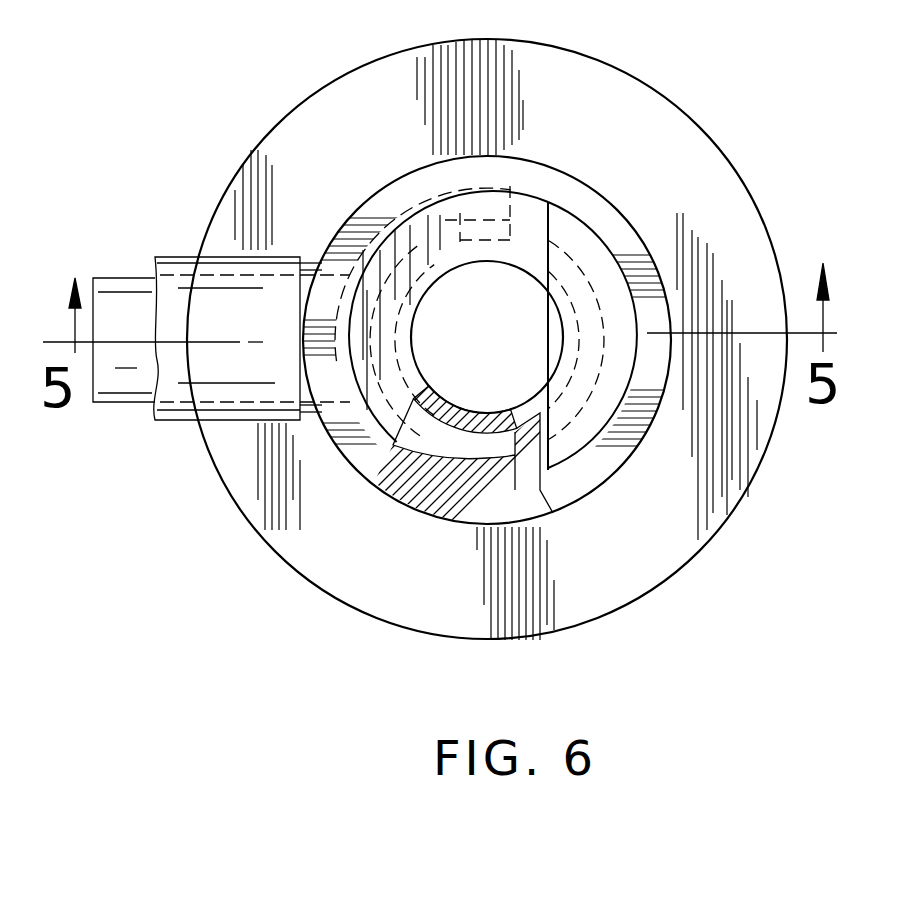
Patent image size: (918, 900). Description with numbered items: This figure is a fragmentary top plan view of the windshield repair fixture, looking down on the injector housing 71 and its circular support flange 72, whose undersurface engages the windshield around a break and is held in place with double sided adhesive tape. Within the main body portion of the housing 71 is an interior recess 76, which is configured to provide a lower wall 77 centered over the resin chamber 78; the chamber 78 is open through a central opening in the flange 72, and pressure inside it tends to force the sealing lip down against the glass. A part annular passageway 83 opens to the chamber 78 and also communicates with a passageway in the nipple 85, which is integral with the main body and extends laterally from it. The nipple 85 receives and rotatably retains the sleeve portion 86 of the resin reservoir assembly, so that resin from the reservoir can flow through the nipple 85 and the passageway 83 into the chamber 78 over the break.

The housing 71 is at (598, 476).
The support flange 72 is at (723, 225).
The interior recess 76 is at (578, 248).
The lower wall 77 is at (497, 287).
The resin chamber 78 is at (450, 423).
The part annular passageway 83 is at (472, 468).
The nipple 85 is at (127, 278).
The sleeve portion 86 is at (183, 425).